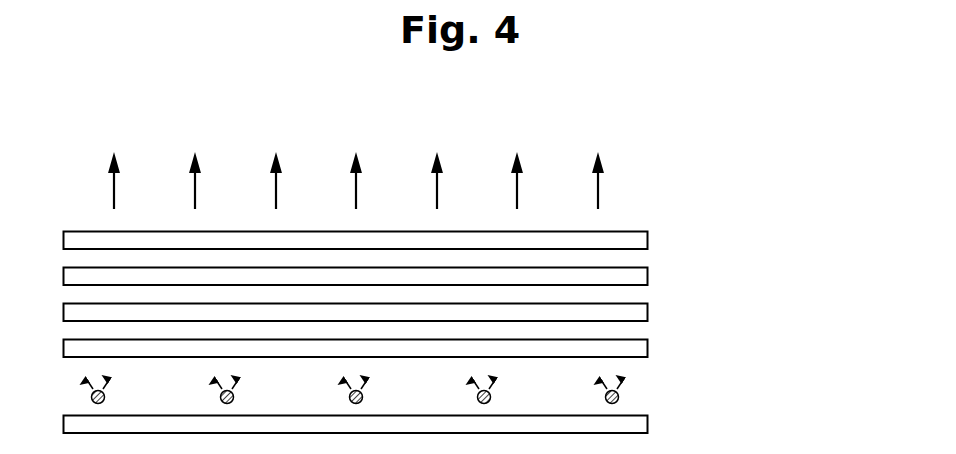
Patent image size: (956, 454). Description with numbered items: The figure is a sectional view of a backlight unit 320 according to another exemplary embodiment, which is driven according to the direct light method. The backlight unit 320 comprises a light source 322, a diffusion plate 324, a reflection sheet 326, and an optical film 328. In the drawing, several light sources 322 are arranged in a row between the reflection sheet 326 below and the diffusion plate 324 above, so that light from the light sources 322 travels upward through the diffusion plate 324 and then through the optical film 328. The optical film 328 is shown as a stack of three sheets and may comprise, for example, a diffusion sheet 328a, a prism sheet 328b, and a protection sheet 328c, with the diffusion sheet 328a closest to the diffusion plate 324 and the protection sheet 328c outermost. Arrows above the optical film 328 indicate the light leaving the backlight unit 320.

The backlight unit 320 is at (597, 127).
The light source 322 is at (619, 394).
The diffusion plate 324 is at (646, 351).
The reflection sheet 326 is at (646, 427).
The optical film 328 is at (455, 278).
The diffusion sheet 328a is at (646, 315).
The prism sheet 328b is at (646, 279).
The protection sheet 328c is at (646, 243).